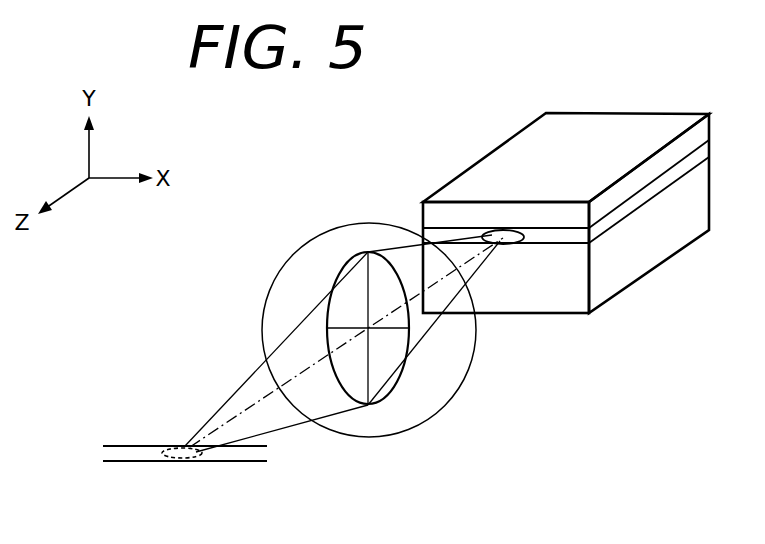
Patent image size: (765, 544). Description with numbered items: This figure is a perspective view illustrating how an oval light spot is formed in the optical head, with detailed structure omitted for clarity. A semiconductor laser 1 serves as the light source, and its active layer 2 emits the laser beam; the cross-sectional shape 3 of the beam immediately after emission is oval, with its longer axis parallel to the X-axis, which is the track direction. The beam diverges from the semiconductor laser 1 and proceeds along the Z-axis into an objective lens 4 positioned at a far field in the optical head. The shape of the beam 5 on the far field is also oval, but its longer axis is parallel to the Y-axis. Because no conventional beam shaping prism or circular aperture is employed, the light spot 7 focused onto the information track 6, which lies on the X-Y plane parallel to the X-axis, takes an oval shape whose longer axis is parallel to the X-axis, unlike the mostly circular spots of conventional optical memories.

The semiconductor laser 1 is at (497, 167).
The active layer 2 is at (560, 240).
The cross-sectional shape of the laser beam 3 is at (513, 245).
The objective lens 4 is at (458, 392).
The shape of the beam on the far field 5 is at (381, 370).
The information track 6 is at (139, 450).
The light spot 7 is at (166, 458).